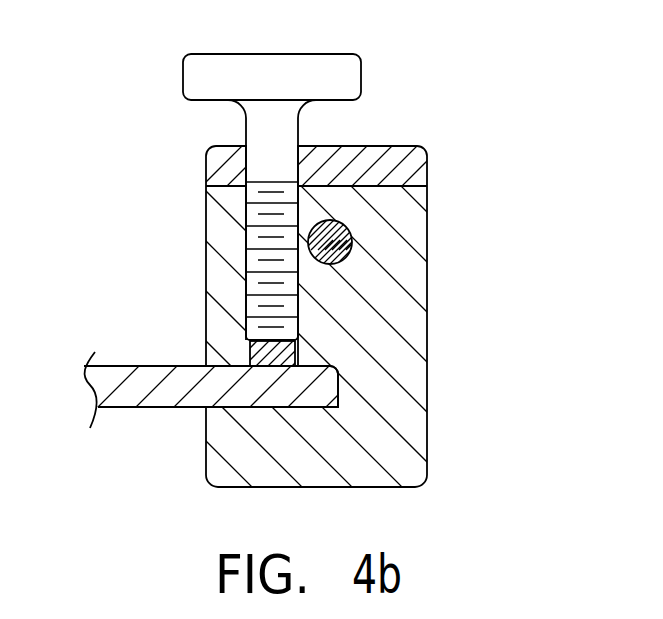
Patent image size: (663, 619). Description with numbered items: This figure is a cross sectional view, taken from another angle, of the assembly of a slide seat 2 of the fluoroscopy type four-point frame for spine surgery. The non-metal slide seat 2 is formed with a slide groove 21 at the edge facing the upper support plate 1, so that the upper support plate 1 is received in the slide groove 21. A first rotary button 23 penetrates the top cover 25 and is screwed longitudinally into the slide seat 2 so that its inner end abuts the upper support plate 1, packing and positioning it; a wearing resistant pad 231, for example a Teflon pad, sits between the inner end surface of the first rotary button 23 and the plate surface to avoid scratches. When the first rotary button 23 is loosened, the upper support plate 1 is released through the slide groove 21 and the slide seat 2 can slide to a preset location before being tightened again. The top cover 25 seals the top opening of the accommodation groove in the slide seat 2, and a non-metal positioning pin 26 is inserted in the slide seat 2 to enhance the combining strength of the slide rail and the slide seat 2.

The upper support plate 1 is at (153, 392).
The slide seat 2 is at (407, 322).
The slide groove 21 is at (310, 364).
The first rotary button 23 is at (335, 77).
The wearing resistant pad 231 is at (247, 355).
The top cover 25 is at (425, 157).
The non-metal positioning pin 26 is at (342, 242).